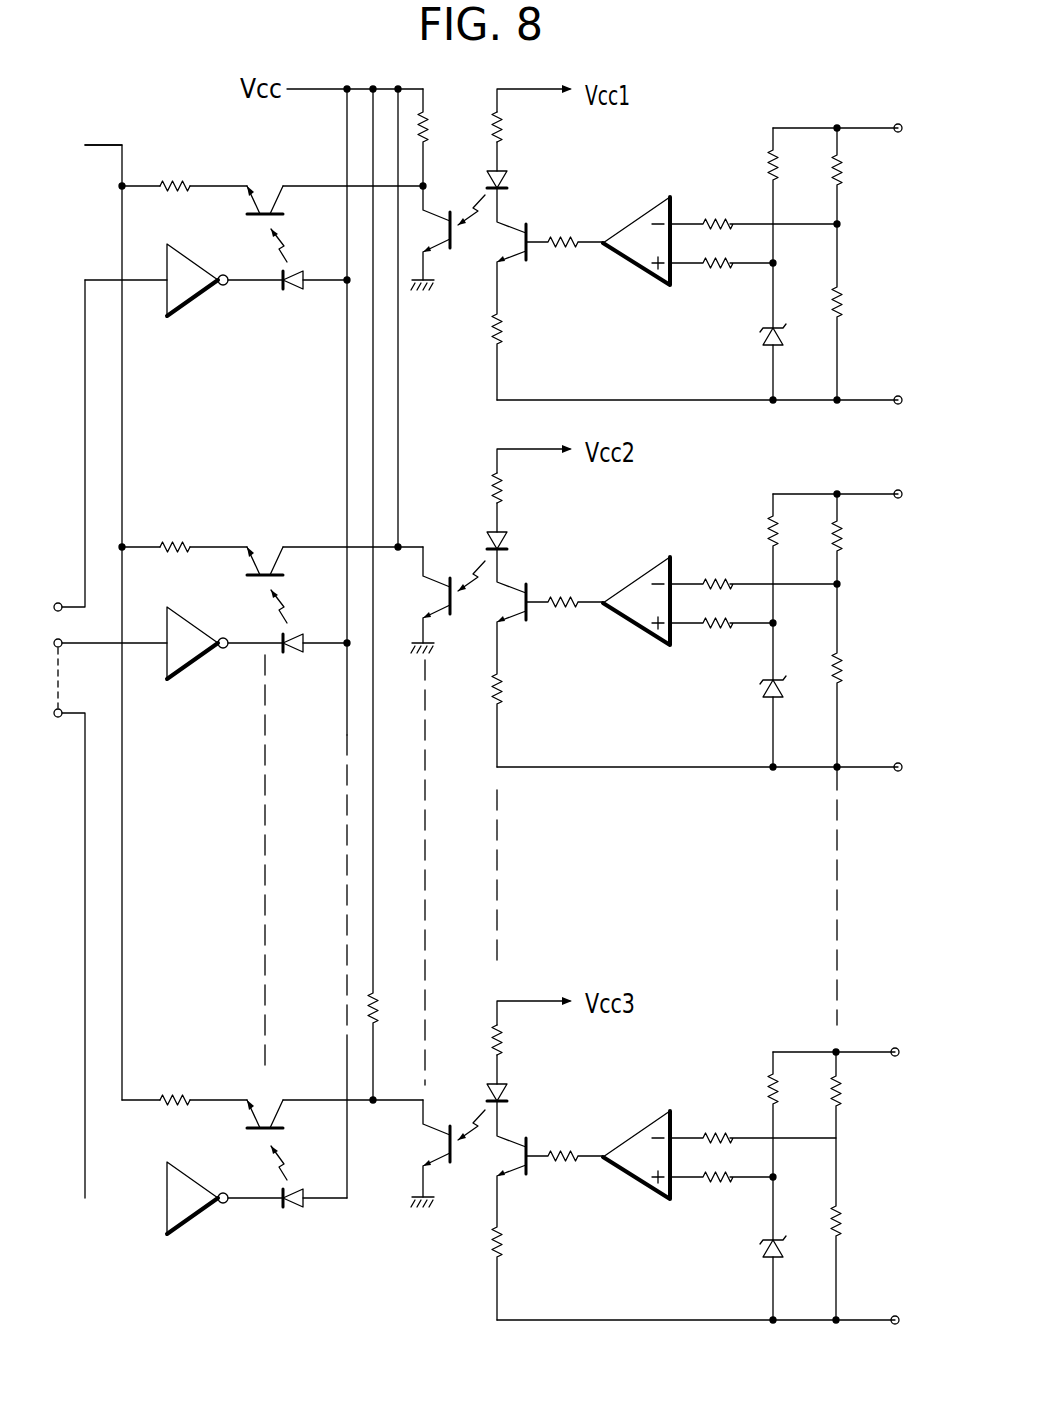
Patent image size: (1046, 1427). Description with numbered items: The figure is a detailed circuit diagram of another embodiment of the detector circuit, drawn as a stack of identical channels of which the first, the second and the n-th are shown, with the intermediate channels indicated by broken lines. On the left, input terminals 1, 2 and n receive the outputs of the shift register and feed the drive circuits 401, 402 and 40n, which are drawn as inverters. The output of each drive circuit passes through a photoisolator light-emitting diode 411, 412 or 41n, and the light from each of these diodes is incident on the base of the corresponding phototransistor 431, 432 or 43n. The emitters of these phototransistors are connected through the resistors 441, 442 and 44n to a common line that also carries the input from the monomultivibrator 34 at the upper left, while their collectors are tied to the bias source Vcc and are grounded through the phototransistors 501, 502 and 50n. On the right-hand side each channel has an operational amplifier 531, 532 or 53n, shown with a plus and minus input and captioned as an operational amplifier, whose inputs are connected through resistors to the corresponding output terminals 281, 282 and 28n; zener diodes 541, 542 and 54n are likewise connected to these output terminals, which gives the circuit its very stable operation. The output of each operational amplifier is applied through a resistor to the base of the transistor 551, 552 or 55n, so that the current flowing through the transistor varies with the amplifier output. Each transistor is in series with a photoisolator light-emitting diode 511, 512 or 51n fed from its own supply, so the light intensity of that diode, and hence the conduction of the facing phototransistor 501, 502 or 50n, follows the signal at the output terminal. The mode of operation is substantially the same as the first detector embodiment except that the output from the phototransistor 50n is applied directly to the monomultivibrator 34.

The monomultivibrator 34 is at (85, 146).
The input terminal 1 is at (63, 596).
The input terminal 2 is at (63, 633).
The input terminal n is at (62, 726).
The resistor 441 is at (175, 184).
The resistor 442 is at (175, 545).
The resistor 44n is at (175, 1098).
The phototransistor 431 is at (262, 212).
The phototransistor 432 is at (262, 573).
The phototransistor 43n is at (265, 1126).
The drive circuit 401 is at (196, 258).
The drive circuit 402 is at (196, 621).
The drive circuit 40n is at (196, 1176).
The light-emitting diode 411 is at (290, 290).
The light-emitting diode 412 is at (291, 654).
The light-emitting diode 41n is at (291, 1209).
The phototransistor 501 is at (440, 225).
The phototransistor 502 is at (440, 588).
The phototransistor 50n is at (435, 1148).
The light-emitting diode 511 is at (506, 180).
The light-emitting diode 512 is at (506, 541).
The light-emitting diode 51n is at (506, 1093).
The transistor 551 is at (512, 232).
The transistor 552 is at (512, 592).
The transistor 55n is at (512, 1146).
The operational amplifier 531 is at (632, 222).
The operational amplifier 532 is at (632, 582).
The operational amplifier 53n is at (634, 1136).
The zener diode 541 is at (765, 340).
The zener diode 542 is at (765, 693).
The zener diode 54n is at (765, 1251).
The output terminal 281 is at (898, 124).
The output terminal 282 is at (898, 498).
The output terminal 28n is at (895, 1048).